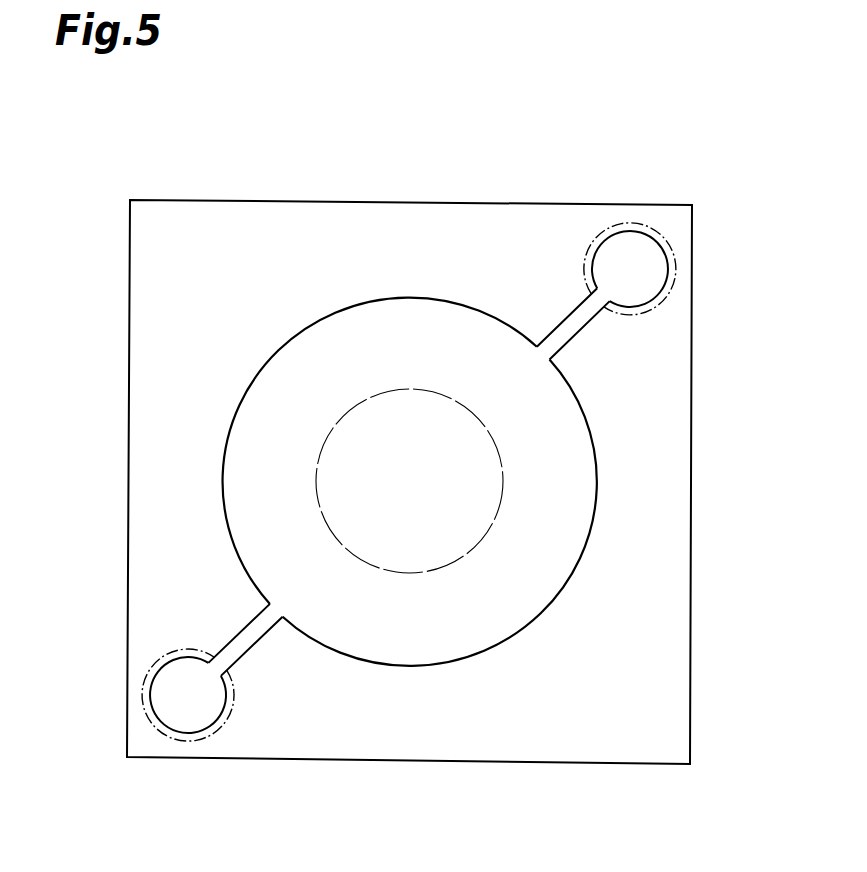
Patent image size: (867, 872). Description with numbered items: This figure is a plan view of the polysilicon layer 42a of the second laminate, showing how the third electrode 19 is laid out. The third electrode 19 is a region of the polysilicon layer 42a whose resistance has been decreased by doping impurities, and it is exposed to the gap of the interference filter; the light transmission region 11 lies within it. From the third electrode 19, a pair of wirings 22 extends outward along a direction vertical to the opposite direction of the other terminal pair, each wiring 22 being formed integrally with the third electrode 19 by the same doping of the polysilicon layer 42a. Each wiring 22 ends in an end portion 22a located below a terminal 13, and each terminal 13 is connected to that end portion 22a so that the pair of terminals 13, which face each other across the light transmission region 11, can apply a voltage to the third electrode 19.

The polysilicon layer 42a is at (415, 761).
The third electrode 19 is at (416, 304).
The light transmission region 11 is at (423, 574).
The wiring 22 is at (586, 323).
The end portion 22a is at (651, 266).
The terminal 13 is at (653, 229).